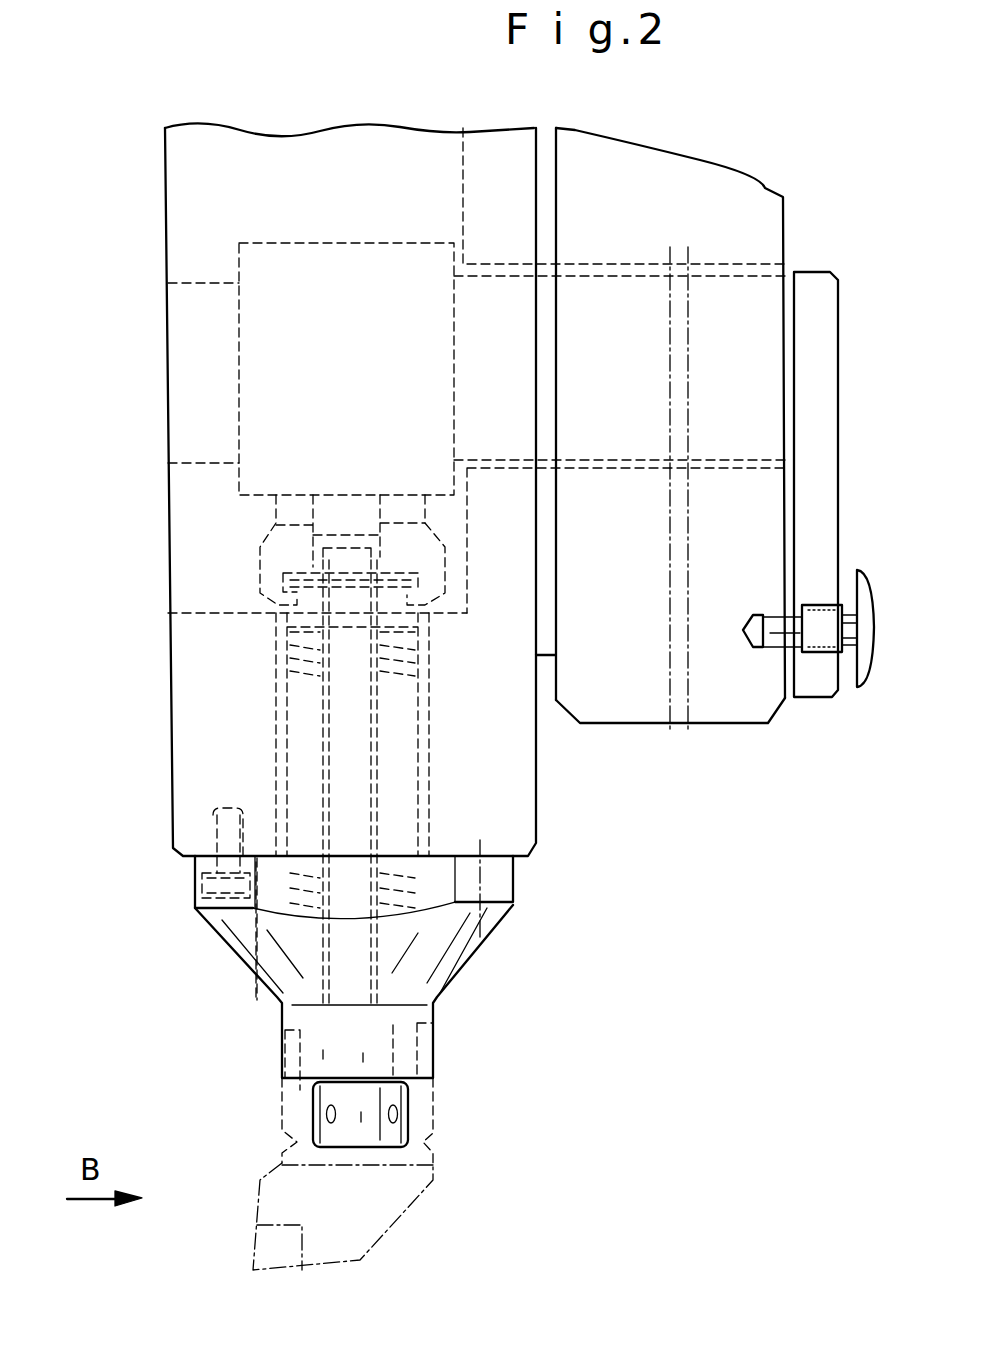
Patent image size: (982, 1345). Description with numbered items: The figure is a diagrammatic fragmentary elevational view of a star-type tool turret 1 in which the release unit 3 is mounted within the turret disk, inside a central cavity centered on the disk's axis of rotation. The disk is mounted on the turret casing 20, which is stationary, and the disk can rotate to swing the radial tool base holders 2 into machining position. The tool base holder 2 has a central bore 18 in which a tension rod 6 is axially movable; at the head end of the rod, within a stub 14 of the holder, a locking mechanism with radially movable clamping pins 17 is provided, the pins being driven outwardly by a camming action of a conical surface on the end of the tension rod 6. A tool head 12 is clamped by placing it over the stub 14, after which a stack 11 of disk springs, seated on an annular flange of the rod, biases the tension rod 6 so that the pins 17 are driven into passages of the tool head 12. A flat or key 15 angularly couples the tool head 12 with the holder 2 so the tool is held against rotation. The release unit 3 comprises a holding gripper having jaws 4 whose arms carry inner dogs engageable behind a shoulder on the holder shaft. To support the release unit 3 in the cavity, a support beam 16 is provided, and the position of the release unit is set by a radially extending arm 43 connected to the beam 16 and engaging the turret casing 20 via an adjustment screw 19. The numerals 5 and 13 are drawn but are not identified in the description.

The tool turret 1 is at (202, 707).
The tool base holder 2 is at (293, 997).
The release unit 3 is at (257, 343).
The jaws 4 is at (275, 545).
The coupling element 5 is at (310, 562).
The tension rod 6 is at (360, 748).
The stack of disk springs 11 is at (243, 870).
The tool head 12 is at (370, 1205).
The bolt head 13 is at (207, 888).
The stub 14 is at (395, 1125).
The key 15 is at (432, 1082).
The support beam 16 is at (590, 327).
The clamping pins 17 is at (327, 1113).
The central bore 18 is at (338, 967).
The adjustment screw 19 is at (778, 647).
The turret casing 20 is at (612, 685).
The radially extending arm 43 is at (807, 293).